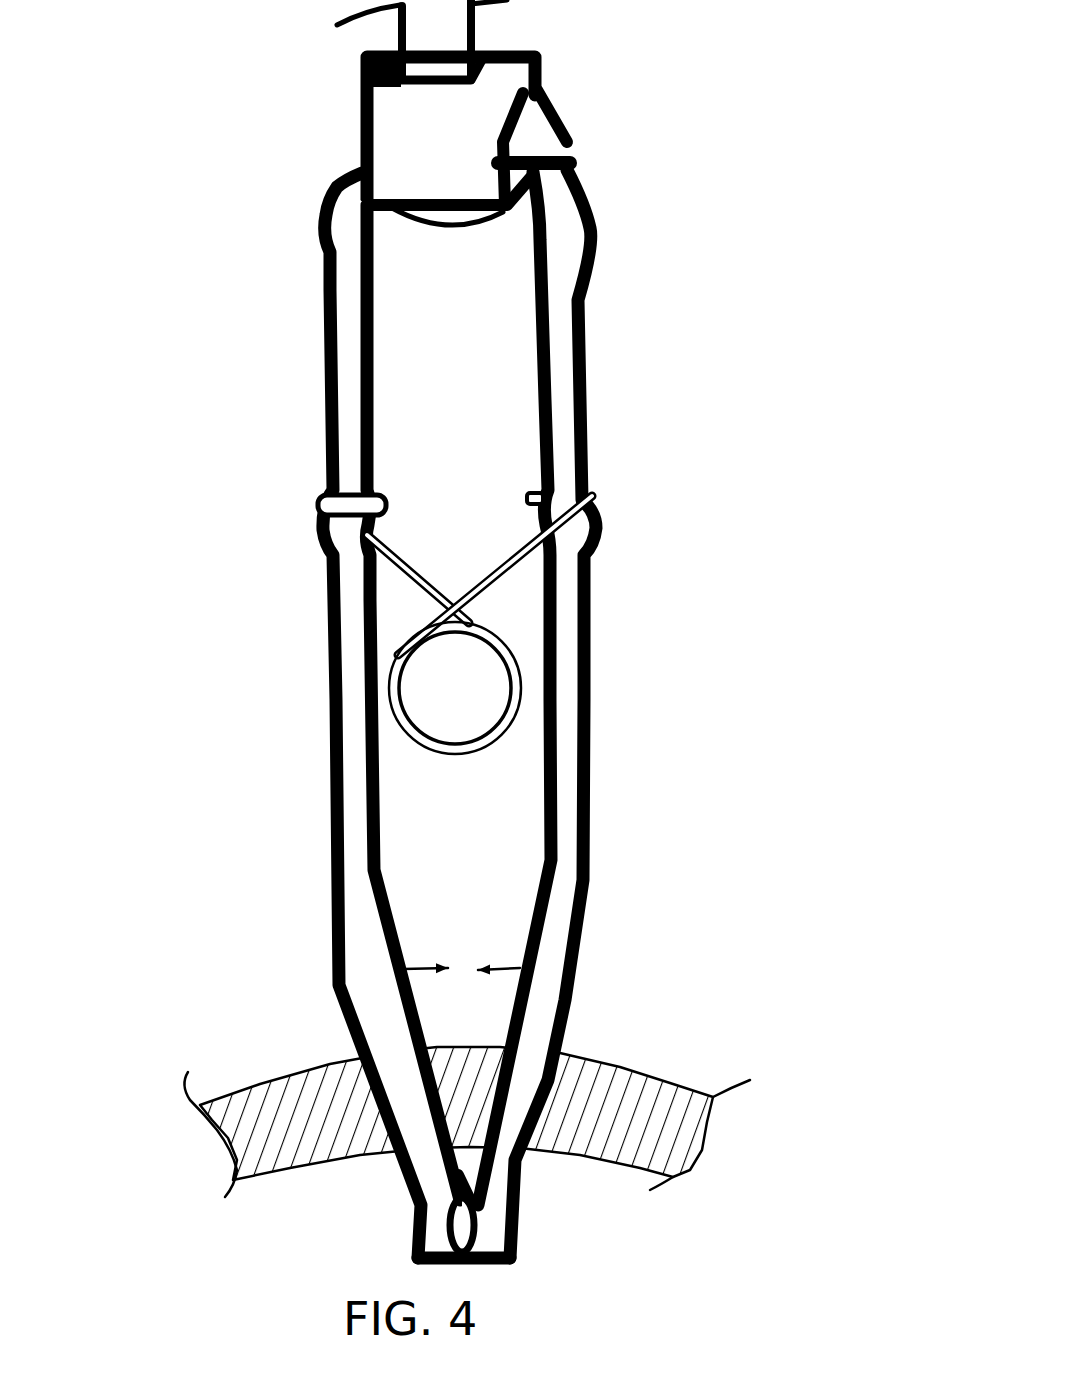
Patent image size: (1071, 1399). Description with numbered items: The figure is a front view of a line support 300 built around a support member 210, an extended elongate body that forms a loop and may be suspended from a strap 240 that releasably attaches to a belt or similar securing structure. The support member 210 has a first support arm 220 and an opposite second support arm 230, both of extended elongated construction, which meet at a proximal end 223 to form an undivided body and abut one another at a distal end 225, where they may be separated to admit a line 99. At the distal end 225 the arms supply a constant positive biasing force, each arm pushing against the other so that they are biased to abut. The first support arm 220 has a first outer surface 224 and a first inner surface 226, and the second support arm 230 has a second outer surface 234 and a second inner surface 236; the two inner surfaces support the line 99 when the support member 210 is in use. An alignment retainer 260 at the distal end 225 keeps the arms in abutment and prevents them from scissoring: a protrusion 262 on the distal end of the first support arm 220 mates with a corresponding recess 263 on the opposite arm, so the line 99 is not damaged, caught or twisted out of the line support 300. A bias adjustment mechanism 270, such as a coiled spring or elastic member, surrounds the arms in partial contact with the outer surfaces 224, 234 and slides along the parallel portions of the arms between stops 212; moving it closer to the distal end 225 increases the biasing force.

The line 99 is at (683, 1080).
The support member 210 is at (486, 656).
The stop 212 is at (320, 235).
The first support arm 220 is at (344, 715).
The proximal end 223 is at (320, 173).
The first outer surface 224 is at (328, 785).
The distal end 225 is at (494, 1244).
The first inner surface 226 is at (378, 830).
The second support arm 230 is at (596, 714).
The second outer surface 234 is at (588, 812).
The second inner surface 236 is at (545, 778).
The strap 240 is at (473, 35).
The alignment retainer 260 is at (470, 1277).
The protrusion 262 is at (443, 1203).
The recess 263 is at (473, 1217).
The bias adjustment mechanism 270 is at (413, 573).
The line support 300 is at (694, 714).